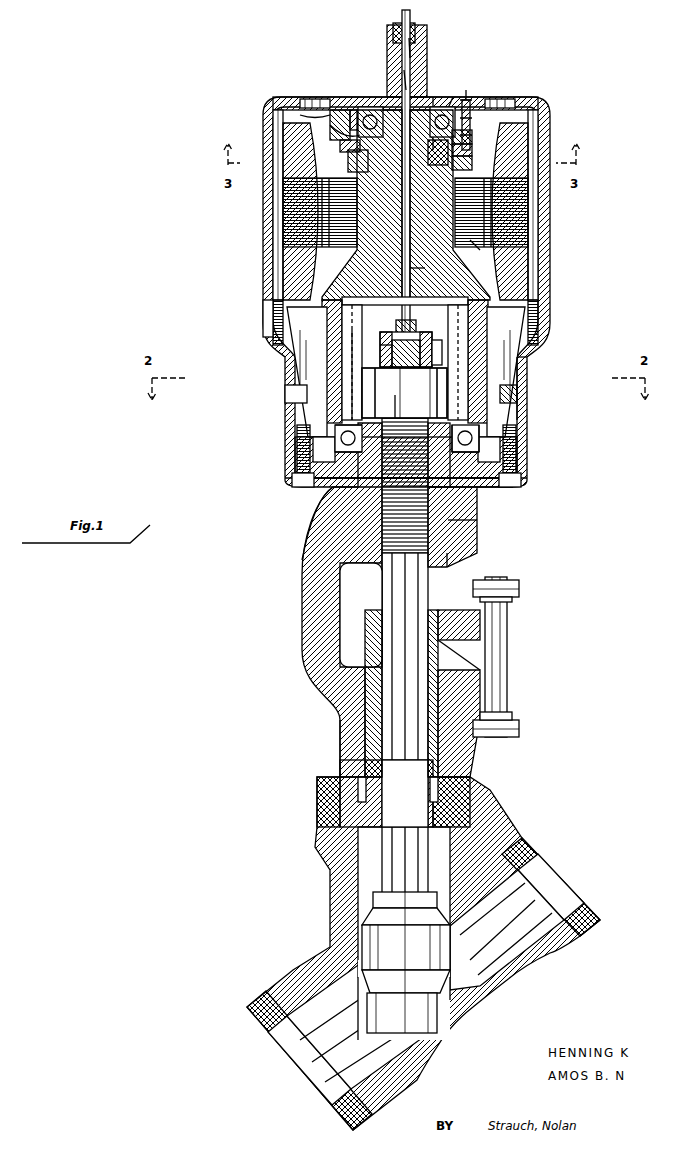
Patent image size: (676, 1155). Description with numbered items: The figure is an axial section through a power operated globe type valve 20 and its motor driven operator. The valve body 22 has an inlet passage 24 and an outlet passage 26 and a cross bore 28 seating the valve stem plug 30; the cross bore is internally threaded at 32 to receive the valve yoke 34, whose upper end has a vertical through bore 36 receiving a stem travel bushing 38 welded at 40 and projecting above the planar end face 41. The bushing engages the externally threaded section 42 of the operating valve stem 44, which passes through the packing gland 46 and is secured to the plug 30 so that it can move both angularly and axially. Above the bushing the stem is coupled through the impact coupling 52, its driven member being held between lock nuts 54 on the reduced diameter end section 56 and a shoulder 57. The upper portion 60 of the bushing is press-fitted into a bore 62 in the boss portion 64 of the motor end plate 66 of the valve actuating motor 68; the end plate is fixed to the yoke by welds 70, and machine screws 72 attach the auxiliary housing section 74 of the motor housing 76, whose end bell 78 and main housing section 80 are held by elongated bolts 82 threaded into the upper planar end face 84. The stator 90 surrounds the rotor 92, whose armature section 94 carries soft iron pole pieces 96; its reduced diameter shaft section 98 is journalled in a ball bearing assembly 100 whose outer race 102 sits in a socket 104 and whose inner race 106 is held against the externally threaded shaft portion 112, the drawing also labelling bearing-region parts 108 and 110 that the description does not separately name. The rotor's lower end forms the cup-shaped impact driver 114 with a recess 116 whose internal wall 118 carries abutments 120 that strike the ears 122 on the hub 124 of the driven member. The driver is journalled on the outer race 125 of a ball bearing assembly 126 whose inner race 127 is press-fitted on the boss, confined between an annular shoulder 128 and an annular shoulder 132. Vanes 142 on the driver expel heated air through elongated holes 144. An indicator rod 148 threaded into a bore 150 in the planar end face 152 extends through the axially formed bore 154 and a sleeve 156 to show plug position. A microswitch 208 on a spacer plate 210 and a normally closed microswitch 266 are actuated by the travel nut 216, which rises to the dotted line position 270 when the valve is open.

The power operated globe type valve 20 is at (516, 995).
The valve body 22 is at (592, 930).
The inlet passage 24 is at (282, 1060).
The outlet passage 26 is at (562, 872).
The cross bore 28 is at (358, 862).
The valve stem plug 30 is at (406, 962).
The internal threads of cross bore 32 is at (336, 772).
The valve yoke 34 is at (310, 688).
The vertical through bore 36 is at (450, 490).
The stem travel bushing 38 is at (470, 525).
The weld 40 is at (448, 562).
The planar end face of valve yoke 41 is at (330, 490).
The externally threaded section of valve stem 42 is at (400, 560).
The operating valve stem 44 is at (455, 602).
The packing gland 46 is at (440, 657).
The valve actuating impact coupling 52 is at (520, 370).
The lock nuts 54 is at (428, 340).
The reduced diameter end section of stem 56 is at (380, 346).
The shoulder 57 is at (376, 388).
The upper portion of bushing 60 is at (446, 412).
The bore 62 is at (396, 420).
The boss portion 64 is at (298, 480).
The motor end plate 66 is at (505, 488).
The valve actuating motor 68 is at (562, 226).
The welds 70 is at (328, 505).
The machine screws 72 is at (296, 442).
The auxiliary housing section 74 is at (520, 378).
The motor housing 76 is at (276, 370).
The end bell 78 is at (320, 102).
The main housing section 80 is at (283, 245).
The elongated bolts 82 is at (276, 200).
The upper planar end face of auxiliary housing section 84 is at (268, 305).
The stator 90 is at (290, 222).
The rotor 92 is at (438, 152).
The armature section 94 is at (390, 250).
The soft iron pole pieces 96 is at (472, 250).
The reduced diameter shaft section 98 is at (387, 60).
The ball bearing assembly 100 is at (454, 90).
The outer race 102 is at (340, 110).
The socket 104 is at (330, 112).
The inner race 106 is at (358, 110).
The adjusting screw 108 is at (470, 102).
The bearing sleeve 110 is at (437, 97).
The externally threaded shaft portion 112 is at (368, 140).
The impact driver 114 is at (506, 372).
The recess 116 is at (422, 269).
The internal wall 118 is at (355, 330).
The abutments 120 is at (356, 350).
The ears 122 is at (452, 344).
The hub 124 is at (514, 394).
The outer race 125 is at (482, 450).
The ball bearing assembly 126 is at (404, 393).
The inner race 127 is at (478, 430).
The annular shoulder 128 is at (340, 430).
The annular shoulder 132 is at (482, 438).
The vanes 142 is at (300, 343).
The elongated holes 144 is at (284, 388).
The indicator rod 148 is at (412, 50).
The bore 150 is at (412, 325).
The planar end face 152 is at (402, 297).
The axially formed bore 154 is at (407, 82).
The sleeve 156 is at (410, 24).
The microswitch 208 is at (472, 162).
The spacer plate 210 is at (472, 150).
The nut 216 is at (350, 168).
The microswitch 266 is at (350, 148).
The dotted line position 270 is at (472, 138).